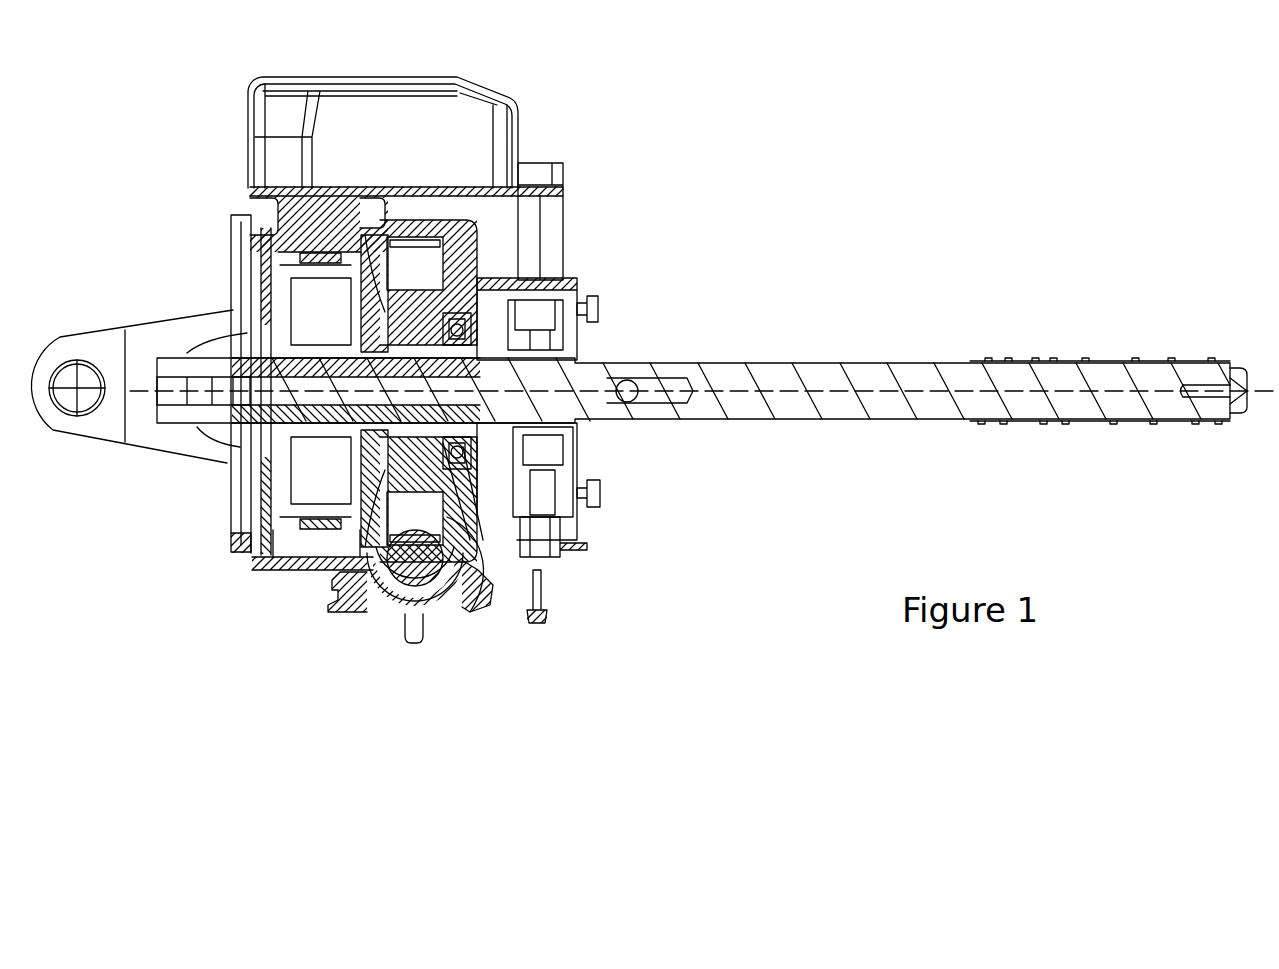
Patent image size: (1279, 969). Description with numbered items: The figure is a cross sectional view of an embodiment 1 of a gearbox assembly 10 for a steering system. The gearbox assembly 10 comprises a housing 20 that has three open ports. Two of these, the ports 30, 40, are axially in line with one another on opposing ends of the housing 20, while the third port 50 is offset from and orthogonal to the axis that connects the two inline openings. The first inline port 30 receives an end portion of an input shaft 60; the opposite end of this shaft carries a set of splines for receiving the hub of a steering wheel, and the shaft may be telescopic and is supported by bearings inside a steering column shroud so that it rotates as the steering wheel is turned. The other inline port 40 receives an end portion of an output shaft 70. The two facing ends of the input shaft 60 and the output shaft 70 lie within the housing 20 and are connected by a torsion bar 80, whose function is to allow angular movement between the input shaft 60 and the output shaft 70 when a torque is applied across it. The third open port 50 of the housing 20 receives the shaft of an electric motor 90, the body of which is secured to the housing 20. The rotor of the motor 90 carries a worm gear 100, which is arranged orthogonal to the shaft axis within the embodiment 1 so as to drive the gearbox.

The drive nut assembly 1 is at (473, 243).
The gearbox assembly 10 is at (657, 453).
The housing 20 is at (572, 280).
The port 30 is at (577, 347).
The port 40 is at (230, 538).
The port 50 is at (433, 620).
The input shaft 60 is at (790, 363).
The output shaft 70 is at (233, 462).
The torsion bar 80 is at (577, 421).
The electric motor 90 is at (472, 612).
The worm gear 100 is at (363, 612).